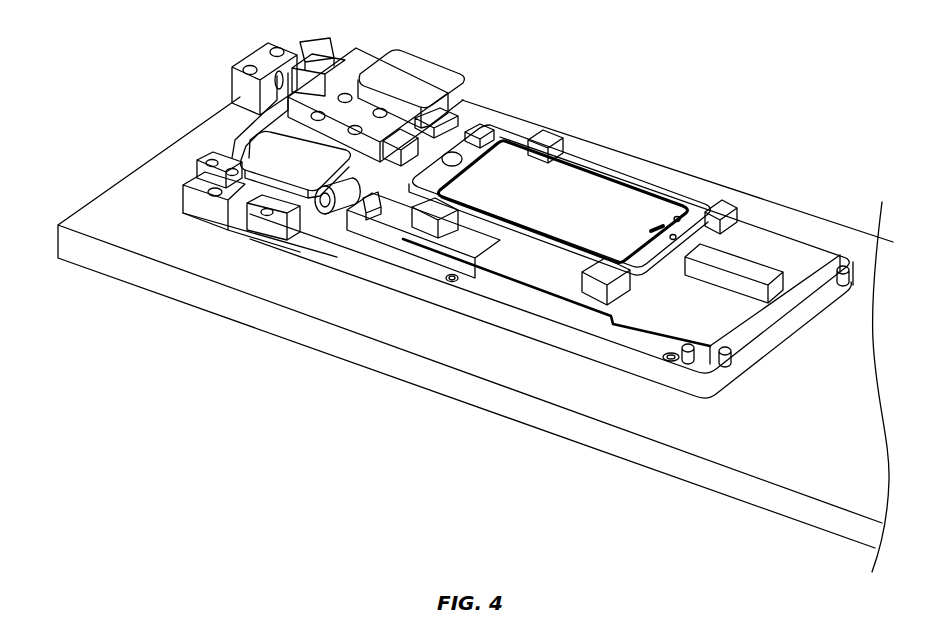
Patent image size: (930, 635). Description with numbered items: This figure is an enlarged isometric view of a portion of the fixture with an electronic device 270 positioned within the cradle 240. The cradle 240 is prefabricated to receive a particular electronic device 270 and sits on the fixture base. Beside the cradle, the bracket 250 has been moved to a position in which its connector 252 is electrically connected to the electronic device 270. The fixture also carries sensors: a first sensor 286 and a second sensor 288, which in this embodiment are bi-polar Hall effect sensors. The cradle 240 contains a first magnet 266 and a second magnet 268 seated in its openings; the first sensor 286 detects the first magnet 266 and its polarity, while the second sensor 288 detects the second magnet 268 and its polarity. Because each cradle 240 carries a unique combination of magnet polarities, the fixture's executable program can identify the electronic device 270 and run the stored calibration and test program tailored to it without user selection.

The cradle 240 is at (750, 223).
The bracket 250 is at (328, 80).
The connector 252 is at (458, 128).
The first magnet 266 is at (370, 208).
The second magnet 268 is at (463, 130).
The electronic device 270 is at (573, 215).
The first sensor 286 is at (337, 205).
The second sensor 288 is at (460, 128).